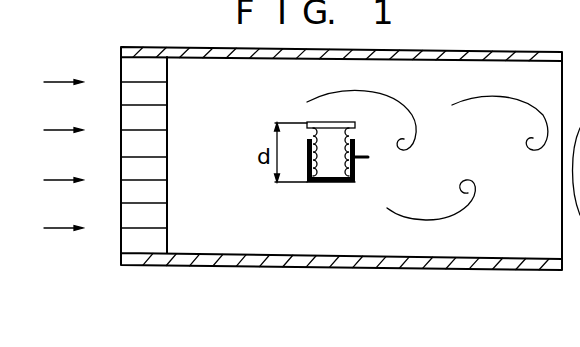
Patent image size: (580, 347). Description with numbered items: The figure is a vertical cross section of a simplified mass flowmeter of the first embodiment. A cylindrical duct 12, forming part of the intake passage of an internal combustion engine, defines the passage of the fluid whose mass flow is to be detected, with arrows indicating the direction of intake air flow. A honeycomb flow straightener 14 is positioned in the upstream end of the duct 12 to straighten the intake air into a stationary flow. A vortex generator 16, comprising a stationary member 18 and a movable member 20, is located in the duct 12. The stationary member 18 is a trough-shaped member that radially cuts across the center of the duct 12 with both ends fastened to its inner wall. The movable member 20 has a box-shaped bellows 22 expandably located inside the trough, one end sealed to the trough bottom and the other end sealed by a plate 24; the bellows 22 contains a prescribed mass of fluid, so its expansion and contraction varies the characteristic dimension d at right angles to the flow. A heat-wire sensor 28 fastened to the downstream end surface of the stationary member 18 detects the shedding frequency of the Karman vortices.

The cylindrical duct 12 is at (202, 262).
The honeycomb flow straightener 14 is at (144, 243).
The vortex generator 16 is at (333, 185).
The stationary member 18 is at (309, 183).
The movable member 20 is at (345, 123).
The bellows 22 is at (318, 123).
The plate 24 is at (339, 122).
The sensor 28 is at (368, 160).